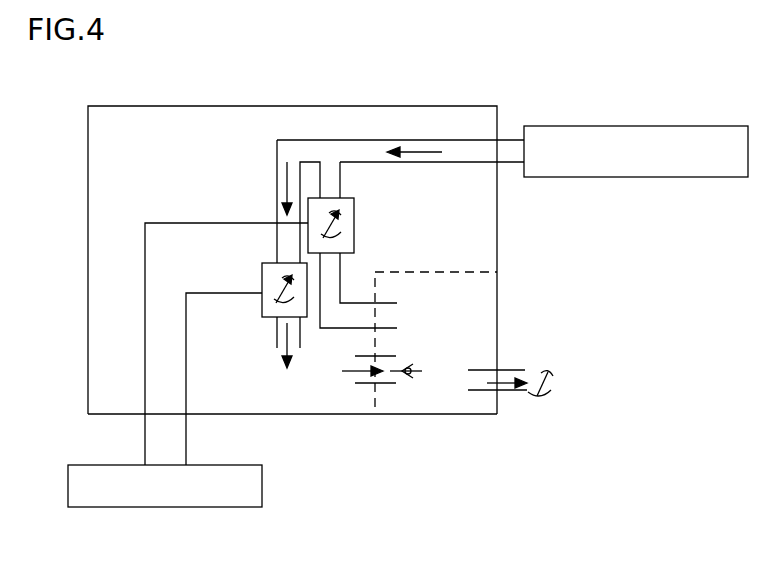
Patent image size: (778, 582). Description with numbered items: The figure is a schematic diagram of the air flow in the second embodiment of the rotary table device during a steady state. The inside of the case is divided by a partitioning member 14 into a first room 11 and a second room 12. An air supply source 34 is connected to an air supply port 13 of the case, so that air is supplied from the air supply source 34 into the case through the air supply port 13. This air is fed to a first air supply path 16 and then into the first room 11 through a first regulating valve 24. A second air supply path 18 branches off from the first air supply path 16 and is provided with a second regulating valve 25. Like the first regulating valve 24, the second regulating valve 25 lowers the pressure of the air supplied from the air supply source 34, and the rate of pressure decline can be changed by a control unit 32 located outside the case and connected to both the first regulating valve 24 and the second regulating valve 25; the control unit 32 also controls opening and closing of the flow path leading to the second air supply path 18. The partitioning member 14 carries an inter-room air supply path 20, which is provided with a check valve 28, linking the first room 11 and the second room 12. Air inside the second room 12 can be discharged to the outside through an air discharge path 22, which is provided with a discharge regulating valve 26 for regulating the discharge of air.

The first room 11 is at (87, 353).
The second room 12 is at (440, 415).
The air supply port 13 is at (501, 140).
The partitioning member 14 is at (375, 395).
The first air supply path 16 is at (277, 202).
The second air supply path 18 is at (342, 275).
The inter-room air supply path 20 is at (360, 383).
The air discharge path 22 is at (512, 370).
The first regulating valve 24 is at (260, 305).
The second regulating valve 25 is at (353, 210).
The discharge regulating valve 26 is at (553, 372).
The check valve 28 is at (422, 369).
The control unit 32 is at (175, 507).
The air supply source 34 is at (562, 126).